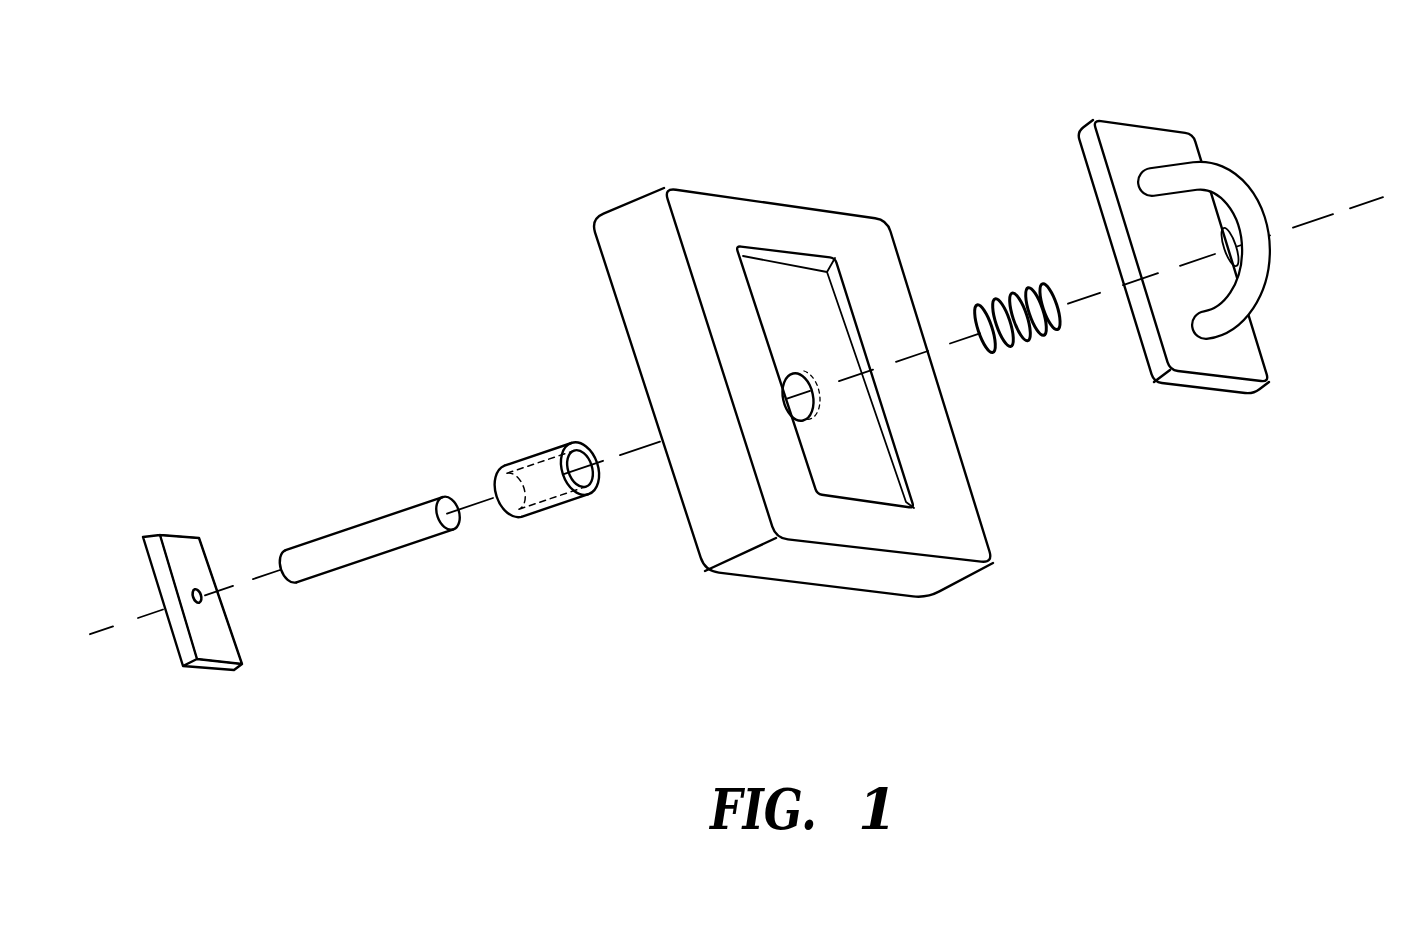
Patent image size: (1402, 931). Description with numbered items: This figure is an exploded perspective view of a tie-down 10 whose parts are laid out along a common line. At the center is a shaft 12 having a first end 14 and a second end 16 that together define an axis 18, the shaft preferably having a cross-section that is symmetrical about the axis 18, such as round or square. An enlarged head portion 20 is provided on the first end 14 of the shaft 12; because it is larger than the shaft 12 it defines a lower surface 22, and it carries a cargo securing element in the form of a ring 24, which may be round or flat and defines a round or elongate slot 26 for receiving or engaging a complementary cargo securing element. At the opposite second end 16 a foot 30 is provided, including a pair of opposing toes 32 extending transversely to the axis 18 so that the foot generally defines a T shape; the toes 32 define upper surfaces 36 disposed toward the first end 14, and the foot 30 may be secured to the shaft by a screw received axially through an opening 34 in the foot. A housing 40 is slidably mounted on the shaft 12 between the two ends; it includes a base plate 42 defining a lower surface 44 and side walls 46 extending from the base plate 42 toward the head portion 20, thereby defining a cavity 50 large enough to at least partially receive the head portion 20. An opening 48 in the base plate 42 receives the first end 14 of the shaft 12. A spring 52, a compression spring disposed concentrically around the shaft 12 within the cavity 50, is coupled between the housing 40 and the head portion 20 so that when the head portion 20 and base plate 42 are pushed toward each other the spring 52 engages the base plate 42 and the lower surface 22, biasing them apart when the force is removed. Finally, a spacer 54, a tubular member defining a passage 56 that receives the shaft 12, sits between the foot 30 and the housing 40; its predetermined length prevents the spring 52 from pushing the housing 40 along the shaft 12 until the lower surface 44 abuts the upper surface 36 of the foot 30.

The tie-down 10 is at (448, 180).
The shaft 12 is at (377, 558).
The first end 14 is at (450, 532).
The second end 16 is at (297, 585).
The axis 18 is at (127, 622).
The head portion 20 is at (1187, 245).
The lower surface 22 is at (1150, 338).
The ring 24 is at (1237, 182).
The slot 26 is at (1243, 247).
The foot 30 is at (186, 585).
The toes 32 is at (163, 533).
The opening 34 is at (197, 594).
The upper surfaces 36 is at (193, 550).
The housing 40 is at (764, 376).
The base plate 42 is at (860, 490).
The lower surface 44 is at (690, 535).
The side walls 46 is at (797, 568).
The opening 48 is at (783, 377).
The cavity 50 is at (816, 317).
The spring 52 is at (1010, 295).
The spacer 54 is at (526, 485).
The passage 56 is at (590, 497).